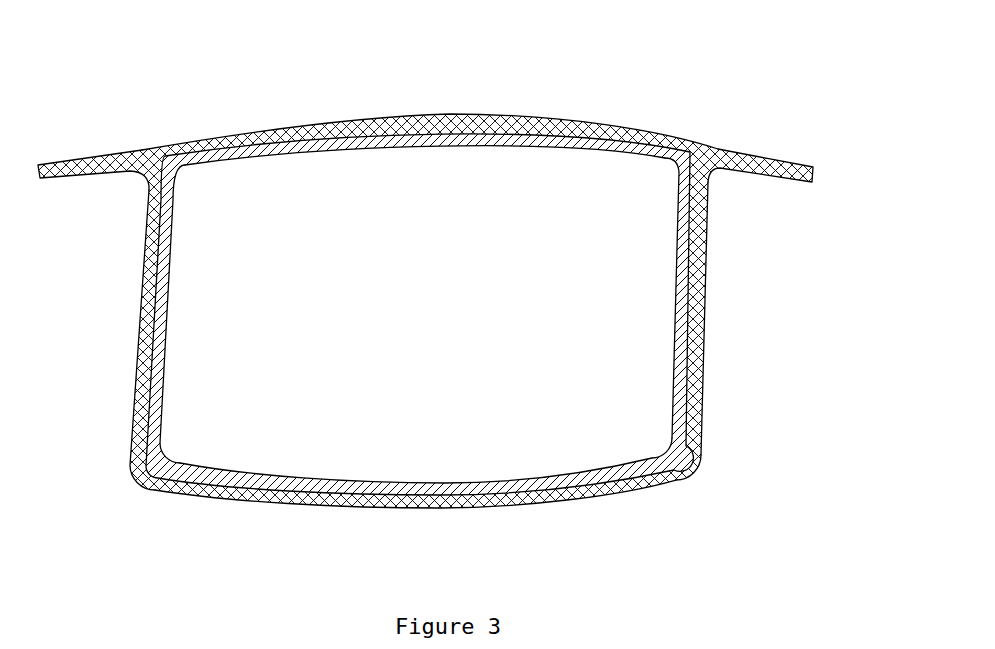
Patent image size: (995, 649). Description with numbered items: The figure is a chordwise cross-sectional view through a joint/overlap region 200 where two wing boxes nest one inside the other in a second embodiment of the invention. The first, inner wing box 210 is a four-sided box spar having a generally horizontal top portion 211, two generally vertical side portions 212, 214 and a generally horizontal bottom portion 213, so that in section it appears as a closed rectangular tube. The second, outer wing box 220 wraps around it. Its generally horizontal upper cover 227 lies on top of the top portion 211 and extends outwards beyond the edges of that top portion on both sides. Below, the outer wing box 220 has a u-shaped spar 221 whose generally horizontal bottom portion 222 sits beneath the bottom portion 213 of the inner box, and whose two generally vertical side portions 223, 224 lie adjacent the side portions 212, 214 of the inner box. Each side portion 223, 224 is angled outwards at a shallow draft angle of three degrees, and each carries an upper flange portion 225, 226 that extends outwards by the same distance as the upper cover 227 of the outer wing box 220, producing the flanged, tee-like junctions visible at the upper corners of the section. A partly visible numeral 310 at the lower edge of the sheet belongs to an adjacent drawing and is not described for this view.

The joint/overlap region 200 is at (735, 62).
The first inner wing box 210 is at (593, 210).
The top portion 211 is at (424, 140).
The side portion 212 is at (162, 317).
The bottom portion 213 is at (434, 490).
The side portion 214 is at (683, 377).
The second outer wing box 220 is at (778, 136).
The u-shaped spar 221 is at (688, 458).
The bottom portion 222 is at (552, 494).
The side portion 223 is at (140, 367).
The side portion 224 is at (702, 320).
The upper flange portion 225 is at (83, 174).
The upper flange portion 226 is at (762, 173).
The upper cover 227 is at (536, 130).
The structure of next figure 310 is at (736, 648).